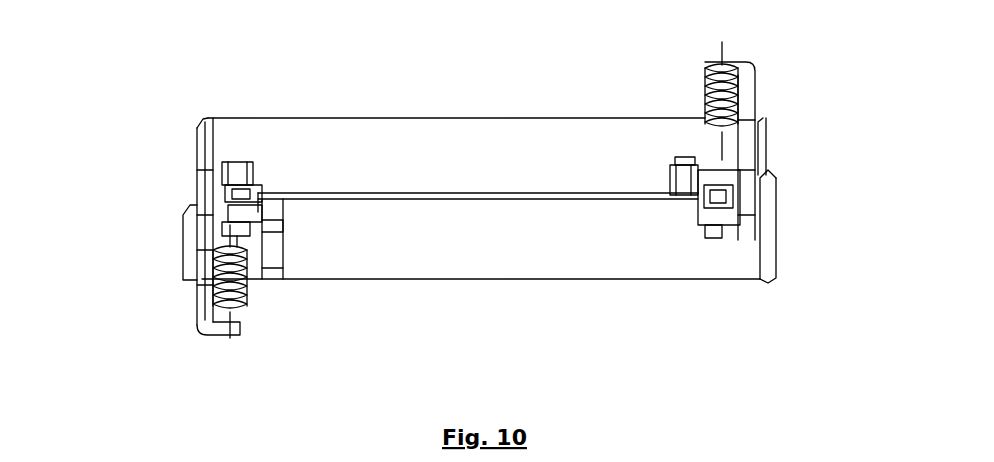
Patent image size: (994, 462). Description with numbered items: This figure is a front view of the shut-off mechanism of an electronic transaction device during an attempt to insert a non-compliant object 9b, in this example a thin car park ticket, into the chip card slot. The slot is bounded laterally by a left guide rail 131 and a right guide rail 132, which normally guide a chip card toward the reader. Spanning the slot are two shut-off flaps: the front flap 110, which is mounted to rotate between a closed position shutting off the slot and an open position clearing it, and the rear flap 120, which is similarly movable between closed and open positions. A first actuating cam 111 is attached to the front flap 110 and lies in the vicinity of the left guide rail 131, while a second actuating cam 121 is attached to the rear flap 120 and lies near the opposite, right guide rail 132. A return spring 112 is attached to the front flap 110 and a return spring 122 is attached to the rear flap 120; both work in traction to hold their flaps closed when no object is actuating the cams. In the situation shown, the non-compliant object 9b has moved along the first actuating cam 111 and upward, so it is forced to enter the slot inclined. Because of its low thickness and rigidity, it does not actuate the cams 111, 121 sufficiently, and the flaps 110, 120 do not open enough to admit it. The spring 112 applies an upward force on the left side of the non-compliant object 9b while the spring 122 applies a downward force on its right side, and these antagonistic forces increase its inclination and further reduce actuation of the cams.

The non-compliant object 9b is at (302, 192).
The front flap 110 is at (440, 265).
The first actuating cam 111 is at (262, 212).
The return spring 112 is at (224, 293).
The rear flap 120 is at (617, 130).
The second actuating cam 121 is at (690, 168).
The return spring 122 is at (712, 100).
The left guide rail 131 is at (236, 173).
The right guide rail 132 is at (723, 214).